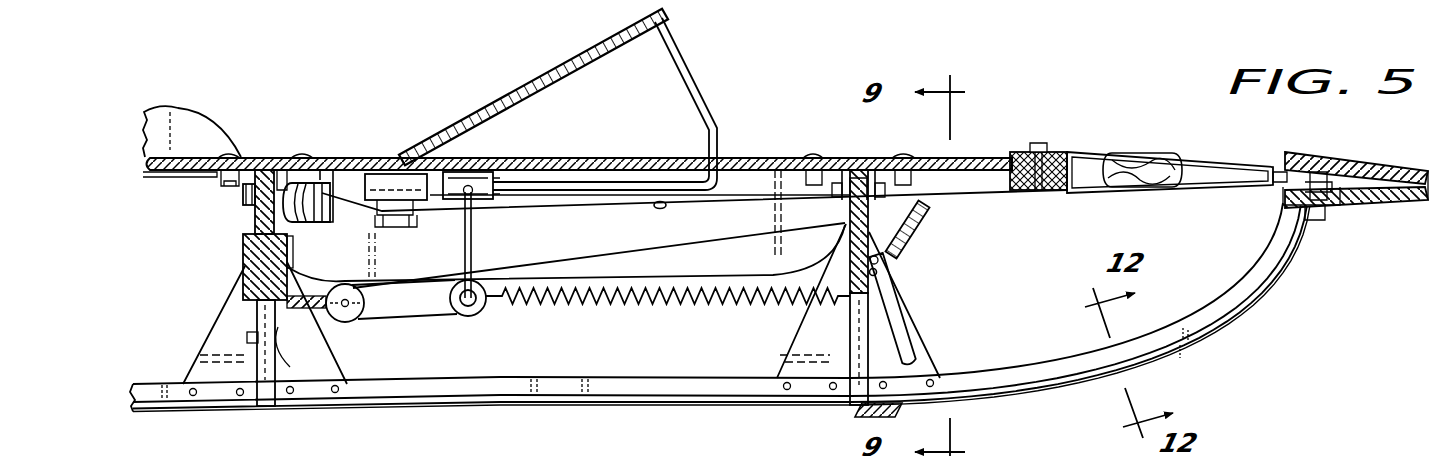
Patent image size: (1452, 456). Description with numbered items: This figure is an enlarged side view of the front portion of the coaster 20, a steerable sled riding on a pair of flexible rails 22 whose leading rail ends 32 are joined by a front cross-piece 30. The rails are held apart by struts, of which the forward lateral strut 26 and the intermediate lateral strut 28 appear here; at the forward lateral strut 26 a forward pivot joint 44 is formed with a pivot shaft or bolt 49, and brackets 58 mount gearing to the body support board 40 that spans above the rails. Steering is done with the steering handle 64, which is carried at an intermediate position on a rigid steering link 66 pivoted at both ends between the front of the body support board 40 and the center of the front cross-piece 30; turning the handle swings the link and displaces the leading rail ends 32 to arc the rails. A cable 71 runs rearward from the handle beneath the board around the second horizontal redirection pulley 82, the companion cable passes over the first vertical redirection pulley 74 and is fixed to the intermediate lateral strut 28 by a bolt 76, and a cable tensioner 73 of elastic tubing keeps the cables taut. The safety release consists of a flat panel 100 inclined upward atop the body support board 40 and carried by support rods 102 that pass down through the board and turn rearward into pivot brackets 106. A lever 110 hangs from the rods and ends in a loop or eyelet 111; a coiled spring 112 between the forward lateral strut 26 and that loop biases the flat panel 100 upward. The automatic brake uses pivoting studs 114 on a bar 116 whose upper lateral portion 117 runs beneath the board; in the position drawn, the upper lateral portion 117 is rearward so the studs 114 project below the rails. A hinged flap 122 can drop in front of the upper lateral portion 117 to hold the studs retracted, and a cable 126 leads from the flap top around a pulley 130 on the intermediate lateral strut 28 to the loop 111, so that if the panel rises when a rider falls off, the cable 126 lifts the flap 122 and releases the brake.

The coaster 20 is at (1058, 38).
The flexible rails 22 is at (655, 385).
The forward lateral strut 26 is at (850, 318).
The intermediate lateral strut 28 is at (262, 322).
The front cross-piece 30 is at (1366, 152).
The leading rail ends 32 is at (1290, 258).
The body support board 40 is at (361, 148).
The forward pivot joint 44 is at (904, 188).
The pivot shaft or bolt 49 is at (860, 175).
The brackets 58 is at (243, 197).
The steering handle 64 is at (1148, 166).
The rigid steering link 66 is at (1232, 160).
The cable 71 is at (685, 205).
The cable tensioner 73 is at (658, 209).
The first vertical redirection pulley 74 is at (308, 222).
The bolt 76 is at (282, 338).
The second horizontal redirection pulley 82 is at (392, 226).
The flat panel 100 is at (545, 80).
The support rods 102 is at (690, 85).
The pivot brackets 106 is at (480, 180).
The lever 110 is at (472, 220).
The loop or eyelet 111 is at (472, 316).
The coiled spring 112 is at (592, 300).
The pivoting studs 114 is at (855, 410).
The bar 116 is at (905, 347).
The upper lateral portion 117 is at (878, 272).
The flap 122 is at (905, 228).
The cable 126 is at (665, 247).
The pulley 130 is at (355, 316).